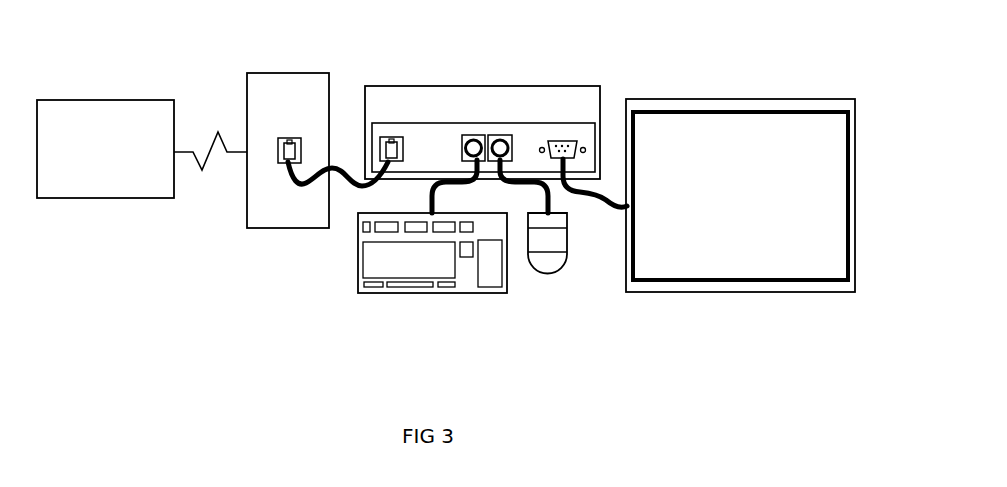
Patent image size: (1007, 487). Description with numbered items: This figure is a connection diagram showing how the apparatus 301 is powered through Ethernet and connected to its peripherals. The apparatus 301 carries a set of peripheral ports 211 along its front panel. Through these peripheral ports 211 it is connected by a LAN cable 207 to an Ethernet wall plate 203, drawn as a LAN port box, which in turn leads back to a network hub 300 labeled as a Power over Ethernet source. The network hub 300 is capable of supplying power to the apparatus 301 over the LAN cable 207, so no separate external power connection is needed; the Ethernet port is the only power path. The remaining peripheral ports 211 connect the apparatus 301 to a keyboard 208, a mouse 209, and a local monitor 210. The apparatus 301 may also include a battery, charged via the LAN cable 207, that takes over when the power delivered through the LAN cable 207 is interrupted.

The network hub 300 is at (142, 134).
The Ethernet wall plate 203 is at (248, 159).
The apparatus 301 is at (436, 96).
The peripheral ports 211 is at (398, 138).
The LAN cable 207 is at (320, 244).
The keyboard 208 is at (422, 248).
The mouse 209 is at (511, 248).
The local monitor 210 is at (708, 219).